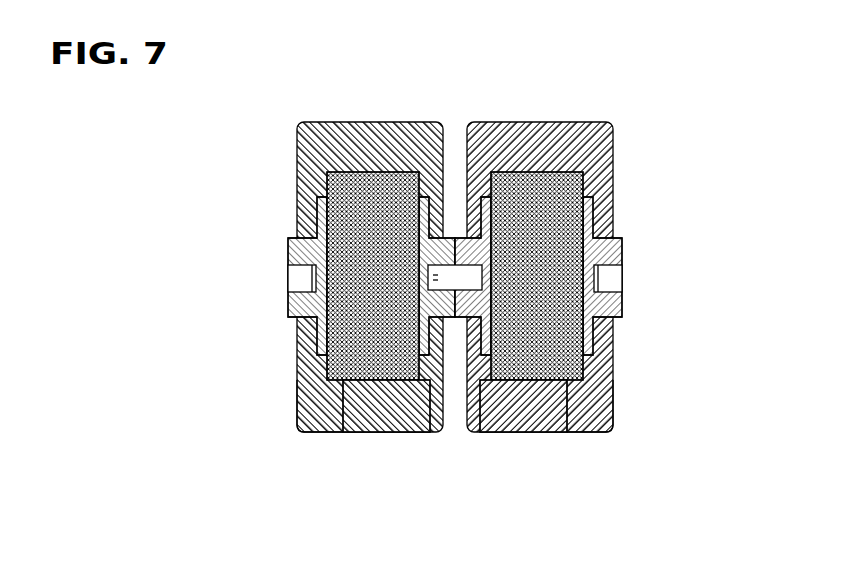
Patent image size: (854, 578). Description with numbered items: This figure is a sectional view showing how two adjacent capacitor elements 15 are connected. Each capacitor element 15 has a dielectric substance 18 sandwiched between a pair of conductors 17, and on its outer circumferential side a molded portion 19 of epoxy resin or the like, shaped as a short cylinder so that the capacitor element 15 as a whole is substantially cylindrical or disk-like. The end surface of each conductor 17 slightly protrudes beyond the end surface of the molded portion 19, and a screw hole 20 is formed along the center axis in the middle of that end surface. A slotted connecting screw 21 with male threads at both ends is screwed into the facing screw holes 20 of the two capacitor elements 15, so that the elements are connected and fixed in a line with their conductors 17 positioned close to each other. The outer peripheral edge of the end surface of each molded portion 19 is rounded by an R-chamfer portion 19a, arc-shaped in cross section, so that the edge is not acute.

The capacitor element 15 is at (378, 117).
The conductor 17 is at (296, 240).
The dielectric substance 18 is at (343, 432).
The molded portion 19 is at (385, 432).
The R-chamfer portion 19a is at (302, 430).
The screw hole 20 is at (300, 280).
The connecting screw 21 is at (452, 238).